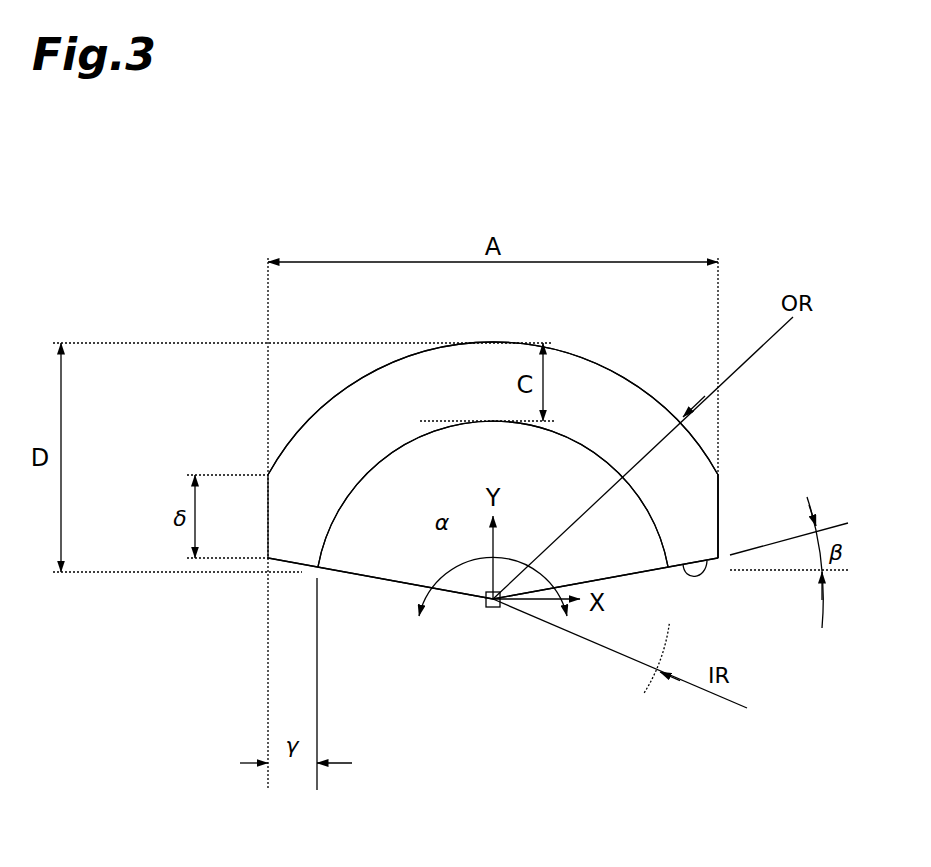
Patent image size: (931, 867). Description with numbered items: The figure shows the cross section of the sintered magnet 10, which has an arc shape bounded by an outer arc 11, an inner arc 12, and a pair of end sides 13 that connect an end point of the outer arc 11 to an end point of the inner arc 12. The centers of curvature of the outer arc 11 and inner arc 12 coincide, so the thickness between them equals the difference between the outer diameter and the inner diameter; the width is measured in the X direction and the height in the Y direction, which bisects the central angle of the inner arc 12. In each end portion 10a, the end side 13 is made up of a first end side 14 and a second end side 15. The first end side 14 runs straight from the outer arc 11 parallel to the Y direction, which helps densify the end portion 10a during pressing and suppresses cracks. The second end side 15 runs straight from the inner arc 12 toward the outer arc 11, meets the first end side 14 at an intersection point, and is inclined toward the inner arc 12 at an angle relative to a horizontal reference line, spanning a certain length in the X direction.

The sintered magnet 10 is at (625, 377).
The end portion 10a is at (305, 505).
The outer arc 11 is at (582, 357).
The inner arc 12 is at (561, 428).
The end side 13 is at (808, 393).
The first end side 14 is at (720, 490).
The second end side 15 is at (700, 575).